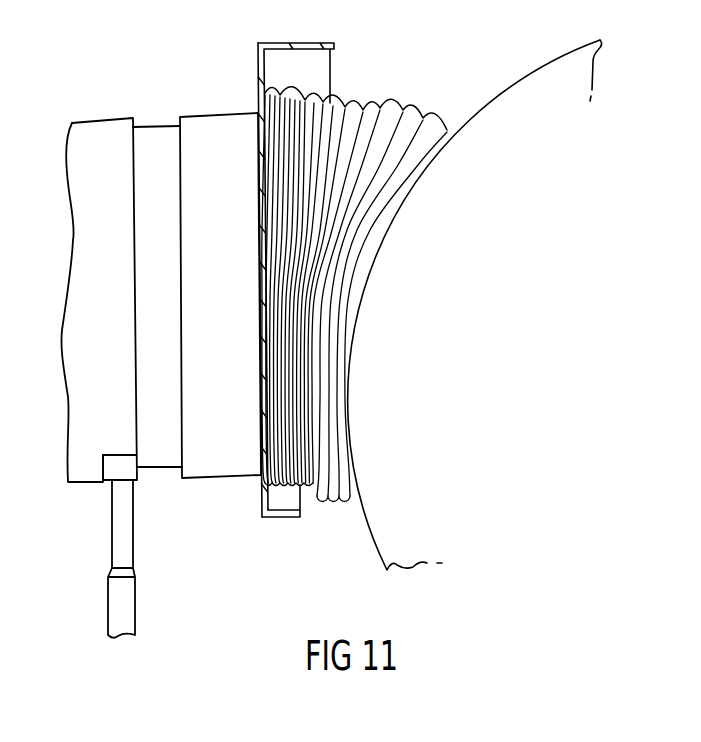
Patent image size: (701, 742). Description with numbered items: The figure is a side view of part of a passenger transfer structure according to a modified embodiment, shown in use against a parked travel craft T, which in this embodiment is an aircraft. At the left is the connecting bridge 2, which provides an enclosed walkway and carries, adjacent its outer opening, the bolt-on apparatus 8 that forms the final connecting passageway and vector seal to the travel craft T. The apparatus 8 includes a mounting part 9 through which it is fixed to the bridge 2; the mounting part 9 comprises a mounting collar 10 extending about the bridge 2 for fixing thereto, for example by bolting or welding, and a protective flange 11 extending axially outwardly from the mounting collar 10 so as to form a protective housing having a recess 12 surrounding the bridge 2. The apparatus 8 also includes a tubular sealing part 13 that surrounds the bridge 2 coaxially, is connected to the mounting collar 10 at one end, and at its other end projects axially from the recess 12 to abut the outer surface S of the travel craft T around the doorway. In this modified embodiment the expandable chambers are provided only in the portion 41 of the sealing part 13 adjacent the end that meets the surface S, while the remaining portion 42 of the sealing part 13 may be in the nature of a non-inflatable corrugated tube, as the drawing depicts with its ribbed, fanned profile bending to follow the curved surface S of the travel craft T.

The connecting bridge 2 is at (92, 110).
The apparatus 8 is at (270, 281).
The mounting part 9 is at (250, 98).
The mounting collar 10 is at (262, 312).
The protective flange 11 is at (298, 43).
The recess 12 is at (282, 494).
The sealing part 13 is at (358, 264).
The portion 41 is at (383, 165).
The remaining portion 42 is at (298, 102).
The outer surface S is at (502, 107).
The travel craft T is at (537, 109).